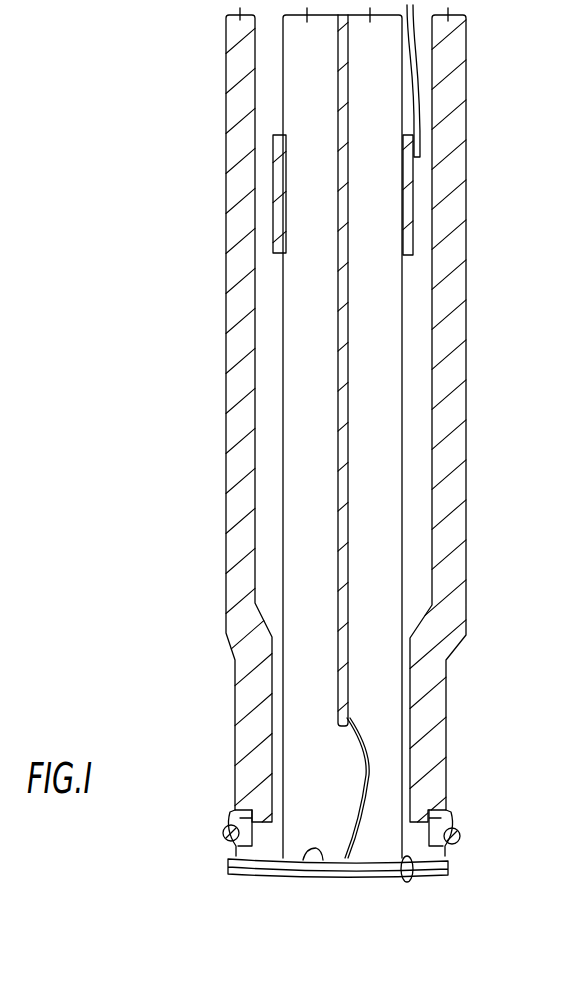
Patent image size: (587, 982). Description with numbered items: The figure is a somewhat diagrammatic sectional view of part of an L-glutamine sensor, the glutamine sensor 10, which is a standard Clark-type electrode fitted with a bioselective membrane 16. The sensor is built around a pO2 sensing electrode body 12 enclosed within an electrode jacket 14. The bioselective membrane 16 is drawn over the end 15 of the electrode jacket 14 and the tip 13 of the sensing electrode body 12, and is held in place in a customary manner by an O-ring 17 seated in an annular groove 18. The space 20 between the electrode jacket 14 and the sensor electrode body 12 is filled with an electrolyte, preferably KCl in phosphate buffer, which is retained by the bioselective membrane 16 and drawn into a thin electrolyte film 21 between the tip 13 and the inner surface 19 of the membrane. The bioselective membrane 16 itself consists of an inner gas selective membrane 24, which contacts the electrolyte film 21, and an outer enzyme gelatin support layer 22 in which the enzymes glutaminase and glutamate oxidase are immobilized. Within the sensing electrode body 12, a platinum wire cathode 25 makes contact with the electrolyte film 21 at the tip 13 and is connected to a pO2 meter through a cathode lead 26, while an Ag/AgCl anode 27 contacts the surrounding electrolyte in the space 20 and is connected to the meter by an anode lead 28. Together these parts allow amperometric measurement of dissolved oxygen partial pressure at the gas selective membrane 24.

The glutamine sensor 10 is at (498, 306).
The sensing electrode body 12 is at (382, 437).
The tip of sensing electrode body 13 is at (280, 878).
The electrode jacket 14 is at (443, 452).
The end of electrode jacket 15 is at (243, 870).
The bioselective membrane 16 is at (410, 880).
The O-ring 17 is at (222, 838).
The annular groove 18 is at (232, 815).
The inner surface of bioselective membrane 19 is at (311, 862).
The space 20 is at (417, 555).
The electrolyte film 21 is at (365, 880).
The outer enzyme gelatin support layer 22 is at (335, 880).
The inner gas selective membrane 24 is at (395, 880).
The platinum wire cathode 25 is at (357, 765).
The cathode lead 26 is at (342, 612).
The Ag/AgCl anode 27 is at (413, 193).
The anode lead 28 is at (420, 78).